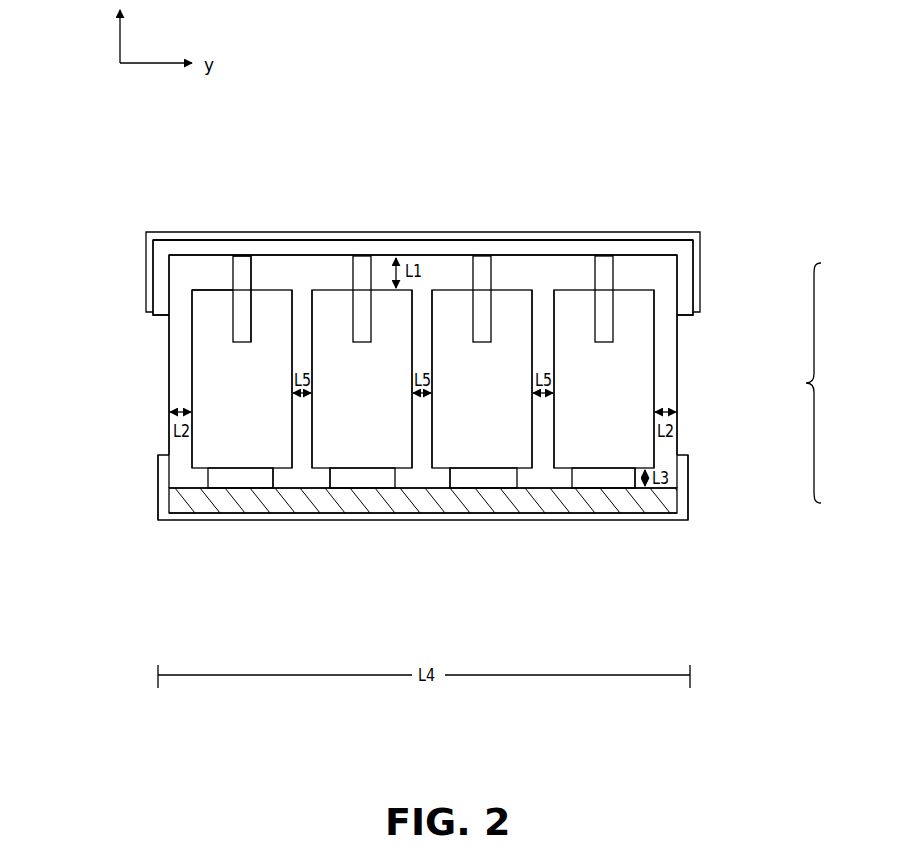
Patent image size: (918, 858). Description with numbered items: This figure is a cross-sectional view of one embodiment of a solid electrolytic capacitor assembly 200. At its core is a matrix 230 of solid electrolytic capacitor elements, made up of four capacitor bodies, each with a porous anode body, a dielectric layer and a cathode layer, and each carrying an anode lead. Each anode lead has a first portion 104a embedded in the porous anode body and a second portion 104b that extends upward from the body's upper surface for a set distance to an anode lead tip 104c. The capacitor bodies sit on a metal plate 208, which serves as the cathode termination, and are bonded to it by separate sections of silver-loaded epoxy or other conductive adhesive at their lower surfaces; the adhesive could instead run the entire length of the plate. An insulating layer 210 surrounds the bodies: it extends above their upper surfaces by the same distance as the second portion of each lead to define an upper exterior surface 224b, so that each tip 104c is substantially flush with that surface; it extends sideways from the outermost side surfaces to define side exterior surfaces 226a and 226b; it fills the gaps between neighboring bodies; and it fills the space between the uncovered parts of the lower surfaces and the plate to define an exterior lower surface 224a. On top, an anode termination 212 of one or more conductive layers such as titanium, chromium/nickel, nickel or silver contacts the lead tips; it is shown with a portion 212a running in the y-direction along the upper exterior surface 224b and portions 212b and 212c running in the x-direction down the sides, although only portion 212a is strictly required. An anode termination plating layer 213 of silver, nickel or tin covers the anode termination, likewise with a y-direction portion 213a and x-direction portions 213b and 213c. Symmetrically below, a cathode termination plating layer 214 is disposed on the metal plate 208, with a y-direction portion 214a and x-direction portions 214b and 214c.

The solid electrolytic capacitor assembly 200 is at (110, 168).
The first portion of anode lead 104a is at (266, 292).
The second portion of anode lead 104b is at (293, 290).
The anode lead tip 104c is at (228, 238).
The metal plate 208 is at (275, 500).
The insulating layer 210 is at (178, 392).
The anode termination 212 is at (386, 240).
The anode termination portion 212a is at (506, 242).
The anode termination portion 212b is at (158, 283).
The anode termination portion 212c is at (688, 276).
The anode termination plating layer 213 is at (660, 233).
The plating layer portion 213a is at (686, 233).
The plating layer portion 213b is at (146, 254).
The plating layer portion 213c is at (701, 247).
The cathode termination plating layer 214 is at (553, 518).
The plating layer portion 214a is at (338, 522).
The plating layer portion 214b is at (160, 496).
The plating layer portion 214c is at (688, 492).
The exterior lower surface 224a is at (197, 500).
The upper exterior surface 224b is at (178, 240).
The side exterior surface 226a is at (169, 358).
The side exterior surface 226b is at (678, 357).
The matrix of solid electrolytic capacitor elements 230 is at (835, 383).